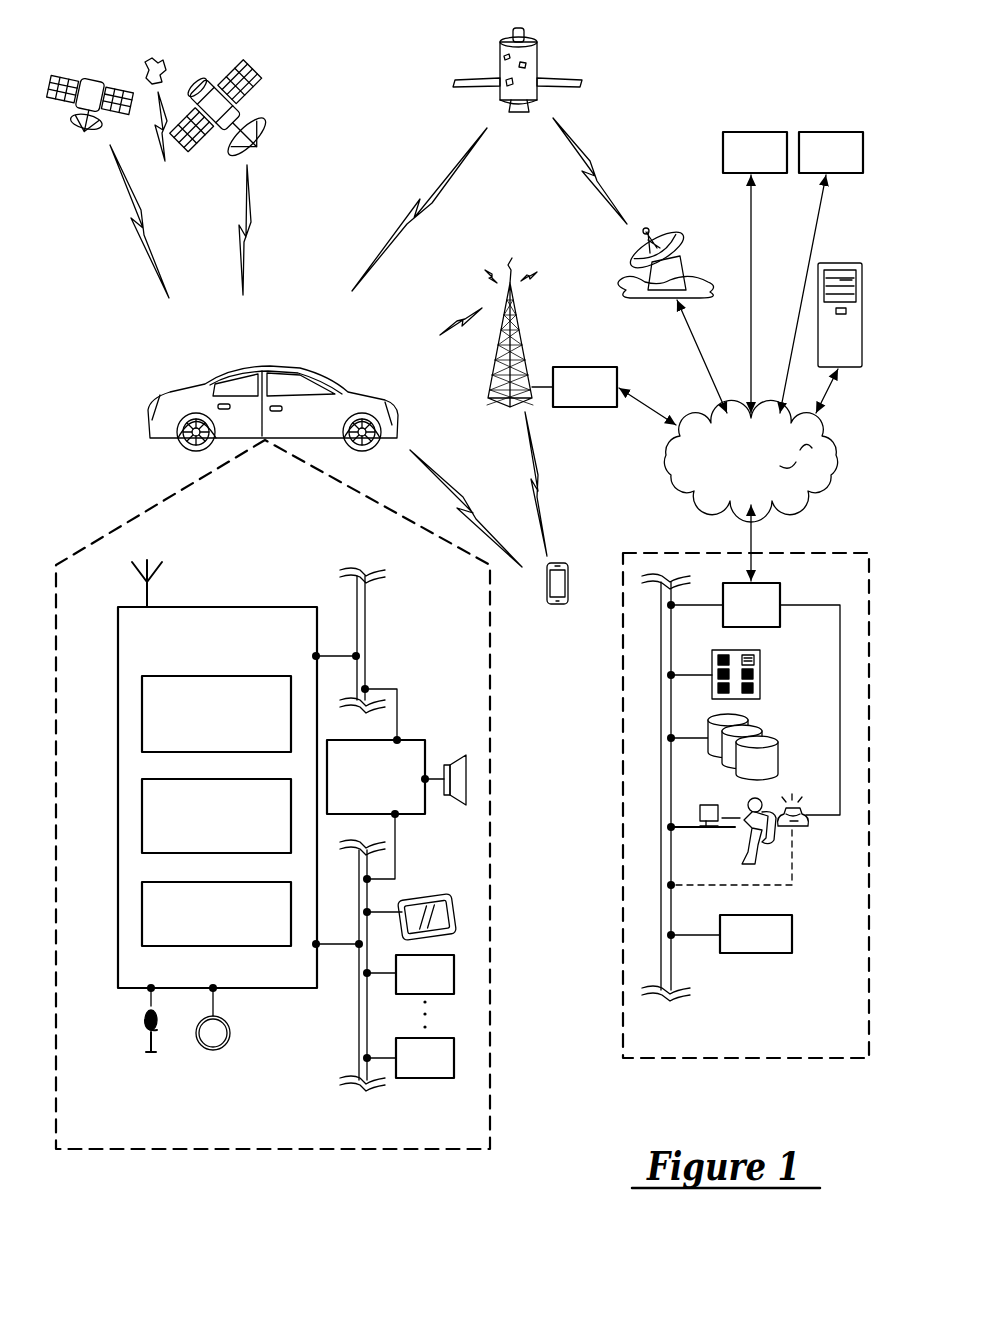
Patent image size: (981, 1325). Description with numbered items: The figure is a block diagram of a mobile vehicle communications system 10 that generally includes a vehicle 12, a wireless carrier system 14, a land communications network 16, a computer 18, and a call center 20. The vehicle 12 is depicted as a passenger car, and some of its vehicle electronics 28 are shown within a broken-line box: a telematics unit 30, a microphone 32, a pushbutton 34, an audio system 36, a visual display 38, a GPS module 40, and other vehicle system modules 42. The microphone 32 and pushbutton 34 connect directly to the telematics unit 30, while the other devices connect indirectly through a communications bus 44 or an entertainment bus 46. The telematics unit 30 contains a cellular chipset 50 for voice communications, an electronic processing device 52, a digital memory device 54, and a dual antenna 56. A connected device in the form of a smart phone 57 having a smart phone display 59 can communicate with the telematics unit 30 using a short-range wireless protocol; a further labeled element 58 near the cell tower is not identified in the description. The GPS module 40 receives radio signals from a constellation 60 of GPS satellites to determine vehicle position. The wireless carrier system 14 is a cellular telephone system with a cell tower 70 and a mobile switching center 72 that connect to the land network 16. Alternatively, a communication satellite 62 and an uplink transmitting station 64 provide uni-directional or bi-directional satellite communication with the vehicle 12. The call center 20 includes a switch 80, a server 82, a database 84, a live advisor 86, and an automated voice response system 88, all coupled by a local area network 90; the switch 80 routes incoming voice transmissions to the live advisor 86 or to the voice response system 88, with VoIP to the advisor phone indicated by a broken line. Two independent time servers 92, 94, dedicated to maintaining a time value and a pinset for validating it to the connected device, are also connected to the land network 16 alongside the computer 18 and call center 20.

The mobile vehicle communications system 10 is at (778, 70).
The vehicle 12 is at (152, 424).
The wireless carrier system 14 is at (495, 413).
The land communications network 16 is at (840, 455).
The computer 18 is at (862, 330).
The call center 20 is at (735, 1058).
The vehicle electronics 28 is at (265, 1150).
The telematics unit 30 is at (270, 607).
The microphone 32 is at (143, 1024).
The pushbutton 34 is at (232, 1030).
The audio system 36 is at (410, 738).
The visual display 38 is at (424, 894).
The GPS module 40 is at (454, 975).
The vehicle system module 42 is at (412, 1078).
The communications bus 44 is at (357, 1022).
The entertainment bus 46 is at (370, 632).
The cellular chipset 50 is at (216, 714).
The electronic processing device 52 is at (216, 816).
The digital memory device 54 is at (216, 914).
The dual antenna 56 is at (146, 595).
The smart phone 57 is at (568, 600).
The short range wireless communication 58 is at (450, 430).
The smart phone display 59 is at (560, 586).
The constellation of GPS satellites 60 is at (314, 128).
The communication satellite 62 is at (538, 48).
The uplink transmitting station 64 is at (690, 265).
The cell tower 70 is at (520, 332).
The mobile switching center 72 is at (583, 367).
The switch 80 is at (755, 699).
The server 82 is at (760, 672).
The database 84 is at (778, 748).
The live advisor 86 is at (738, 852).
The automated voice response system 88 is at (792, 933).
The local area network 90 is at (673, 978).
The independent time server 92 is at (752, 132).
The independent time server 94 is at (828, 132).